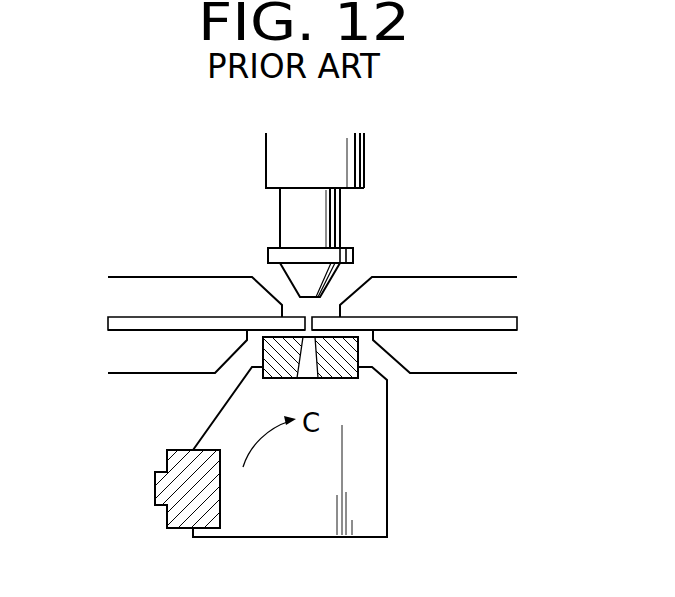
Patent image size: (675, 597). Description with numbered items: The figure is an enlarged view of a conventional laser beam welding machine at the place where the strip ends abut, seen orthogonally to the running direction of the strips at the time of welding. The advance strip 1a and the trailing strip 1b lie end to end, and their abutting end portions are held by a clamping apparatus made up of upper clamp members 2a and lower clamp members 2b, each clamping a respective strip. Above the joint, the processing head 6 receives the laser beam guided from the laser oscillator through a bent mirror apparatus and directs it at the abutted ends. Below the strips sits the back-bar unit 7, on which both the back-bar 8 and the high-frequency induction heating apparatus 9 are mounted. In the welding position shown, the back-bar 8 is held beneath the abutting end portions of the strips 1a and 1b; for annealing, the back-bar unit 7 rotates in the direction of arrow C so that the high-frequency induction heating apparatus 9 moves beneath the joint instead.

The processing head 6 is at (347, 150).
The advance strip 1a is at (505, 316).
The trailing strip 1b is at (130, 330).
The upper clamp members 2a is at (178, 280).
The lower clamp members 2b is at (155, 353).
The back-bar unit 7 is at (405, 491).
The back-bar 8 is at (358, 378).
The high-frequency induction heating apparatus 9 is at (167, 515).